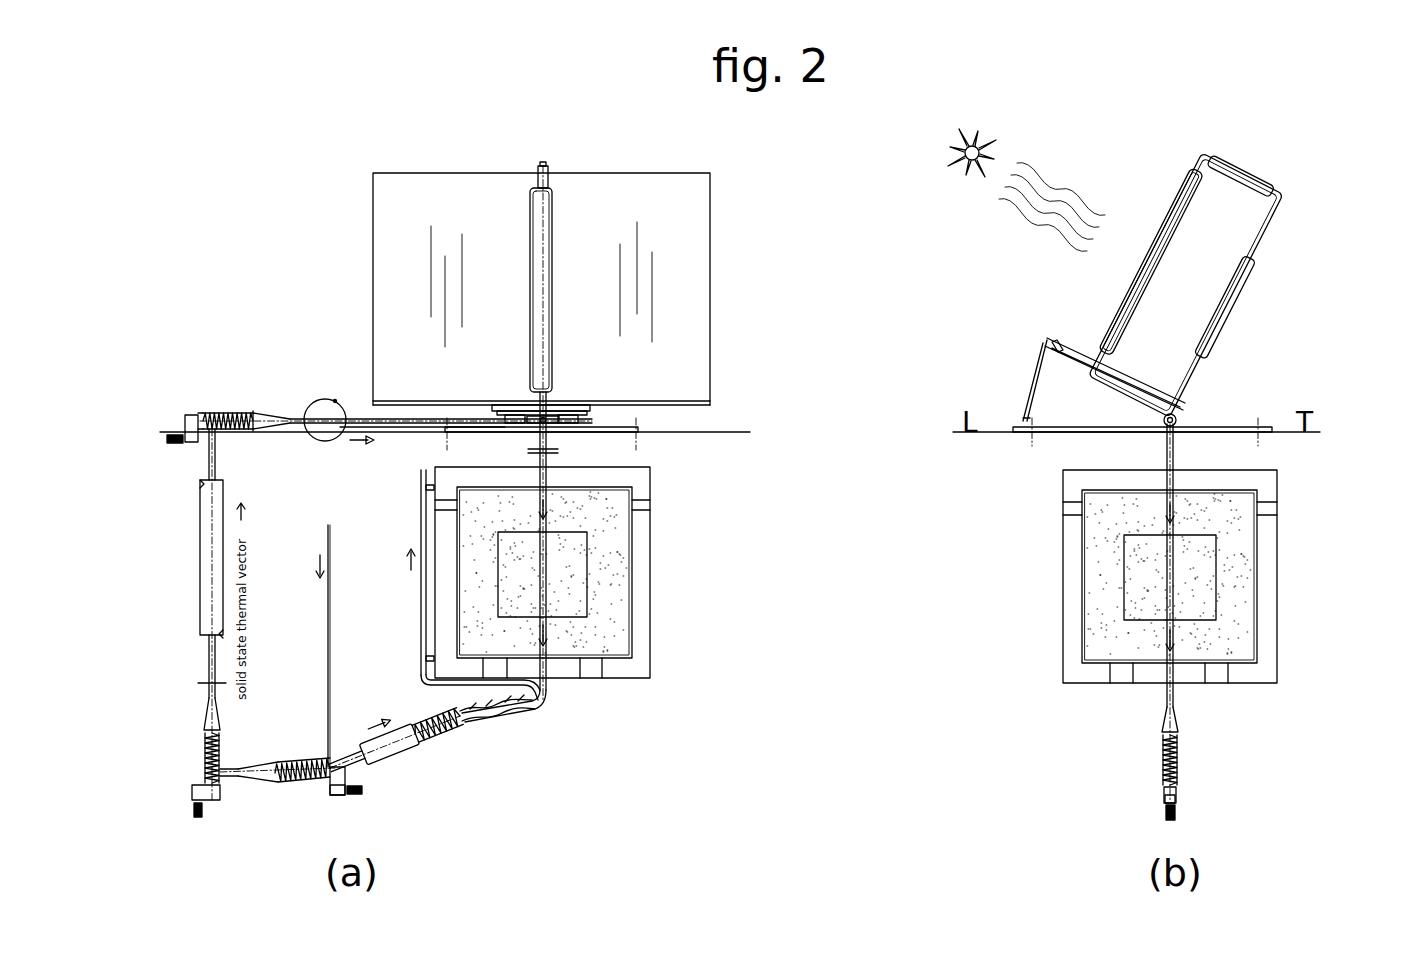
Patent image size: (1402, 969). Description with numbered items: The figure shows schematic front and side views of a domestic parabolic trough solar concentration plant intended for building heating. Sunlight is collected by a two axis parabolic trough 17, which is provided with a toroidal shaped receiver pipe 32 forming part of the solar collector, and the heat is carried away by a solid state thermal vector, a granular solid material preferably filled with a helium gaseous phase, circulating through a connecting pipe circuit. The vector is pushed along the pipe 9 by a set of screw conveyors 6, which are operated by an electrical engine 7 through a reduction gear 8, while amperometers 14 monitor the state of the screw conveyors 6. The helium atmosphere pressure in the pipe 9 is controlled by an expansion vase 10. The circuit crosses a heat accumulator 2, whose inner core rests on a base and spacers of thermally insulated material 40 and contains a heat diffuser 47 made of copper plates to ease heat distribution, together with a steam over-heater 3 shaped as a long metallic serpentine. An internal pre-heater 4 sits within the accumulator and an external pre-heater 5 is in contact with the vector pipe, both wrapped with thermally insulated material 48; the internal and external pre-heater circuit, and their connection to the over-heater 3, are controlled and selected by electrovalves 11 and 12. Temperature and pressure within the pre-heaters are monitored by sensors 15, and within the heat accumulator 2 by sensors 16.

The heat accumulator 2 is at (667, 556).
The steam over-heater 3 is at (1240, 595).
The internal pre-heater 4 is at (632, 627).
The external pre-heater 5 is at (511, 716).
The screw conveyors 6 is at (310, 768).
The electrical engine 7 is at (362, 789).
The reduction gear 8 is at (340, 795).
The pipe 9 is at (233, 775).
The expansion vase 10 is at (320, 401).
The electrovalve 11 is at (421, 488).
The electrovalve 12 is at (421, 656).
The amperometers 14 is at (330, 790).
The sensors 15 is at (626, 472).
The sensors 16 is at (630, 492).
The two axis parabolic trough 17 is at (700, 205).
The heat collector tube 32 is at (551, 215).
The thermally insulated material 40 is at (590, 668).
The heat diffuser 47 is at (586, 560).
The thermally insulated material 48 is at (425, 742).